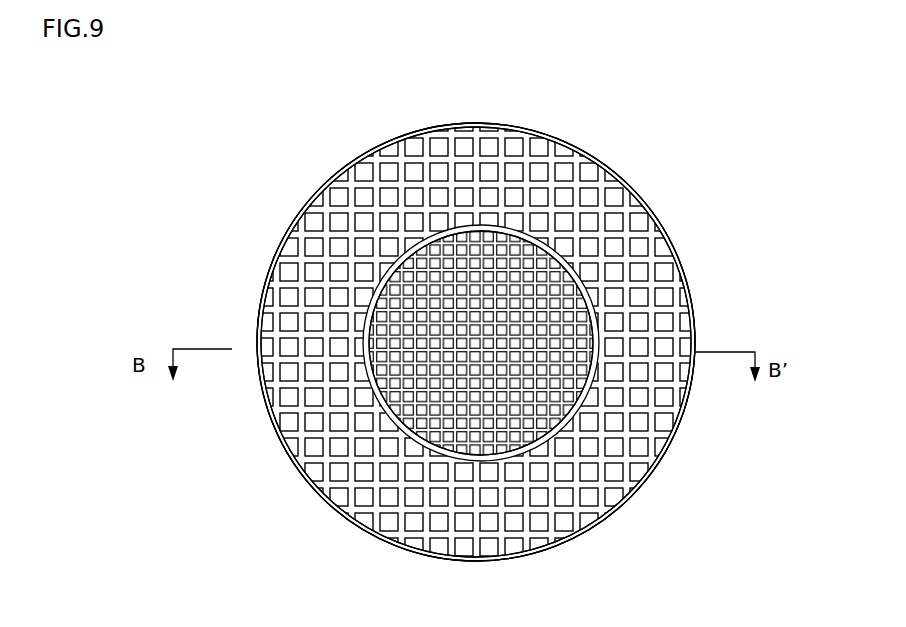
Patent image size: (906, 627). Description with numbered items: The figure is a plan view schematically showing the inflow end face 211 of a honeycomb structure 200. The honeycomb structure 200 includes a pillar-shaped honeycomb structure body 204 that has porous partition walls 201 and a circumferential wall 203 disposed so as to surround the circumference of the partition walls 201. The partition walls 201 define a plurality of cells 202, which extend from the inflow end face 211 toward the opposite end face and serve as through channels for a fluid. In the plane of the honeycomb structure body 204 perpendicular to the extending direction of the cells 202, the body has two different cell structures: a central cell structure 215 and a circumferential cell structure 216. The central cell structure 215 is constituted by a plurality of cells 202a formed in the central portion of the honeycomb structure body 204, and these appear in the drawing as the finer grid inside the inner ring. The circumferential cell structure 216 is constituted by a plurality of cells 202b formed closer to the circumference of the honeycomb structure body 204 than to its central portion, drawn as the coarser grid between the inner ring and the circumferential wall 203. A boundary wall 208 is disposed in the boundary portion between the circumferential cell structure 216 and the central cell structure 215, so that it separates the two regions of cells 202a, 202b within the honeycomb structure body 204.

The honeycomb structure 200 is at (800, 42).
The partition walls 201 is at (502, 187).
The cells 202 is at (484, 300).
The cells 202a is at (538, 287).
The cells 202b is at (438, 177).
The circumferential wall 203 is at (668, 242).
The honeycomb structure body 204 is at (696, 409).
The boundary wall 208 is at (597, 343).
The inflow end face 211 is at (315, 185).
The central cell structure 215 is at (403, 412).
The circumferential cell structure 216 is at (417, 495).